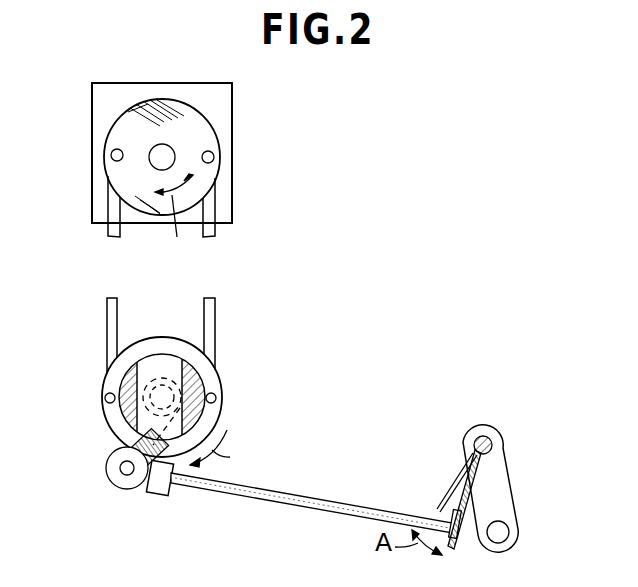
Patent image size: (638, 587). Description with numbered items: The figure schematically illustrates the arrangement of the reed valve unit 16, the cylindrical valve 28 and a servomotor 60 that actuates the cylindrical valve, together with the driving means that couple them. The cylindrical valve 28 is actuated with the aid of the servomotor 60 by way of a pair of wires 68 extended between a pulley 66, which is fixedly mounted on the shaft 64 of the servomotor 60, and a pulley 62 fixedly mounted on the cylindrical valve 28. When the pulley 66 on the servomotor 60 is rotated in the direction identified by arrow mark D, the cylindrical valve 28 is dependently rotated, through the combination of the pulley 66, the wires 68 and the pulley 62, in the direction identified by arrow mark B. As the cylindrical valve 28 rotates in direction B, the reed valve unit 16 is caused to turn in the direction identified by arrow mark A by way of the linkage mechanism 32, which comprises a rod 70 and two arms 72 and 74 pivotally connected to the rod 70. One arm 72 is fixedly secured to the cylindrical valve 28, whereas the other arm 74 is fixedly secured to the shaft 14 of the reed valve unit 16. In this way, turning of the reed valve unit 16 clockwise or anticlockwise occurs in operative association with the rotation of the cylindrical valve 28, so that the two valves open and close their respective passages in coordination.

The shaft 14 is at (494, 446).
The reed valve unit 16 is at (490, 488).
The cylindrical valve 28 is at (120, 402).
The linkage mechanism 32 is at (303, 512).
The servomotor 60 is at (222, 118).
The pulley 62 is at (208, 420).
The shaft 64 is at (153, 157).
The pulley 66 is at (200, 133).
The wires 68 is at (118, 233).
The rod 70 is at (307, 493).
The arm 72 is at (115, 440).
The arm 74 is at (510, 517).